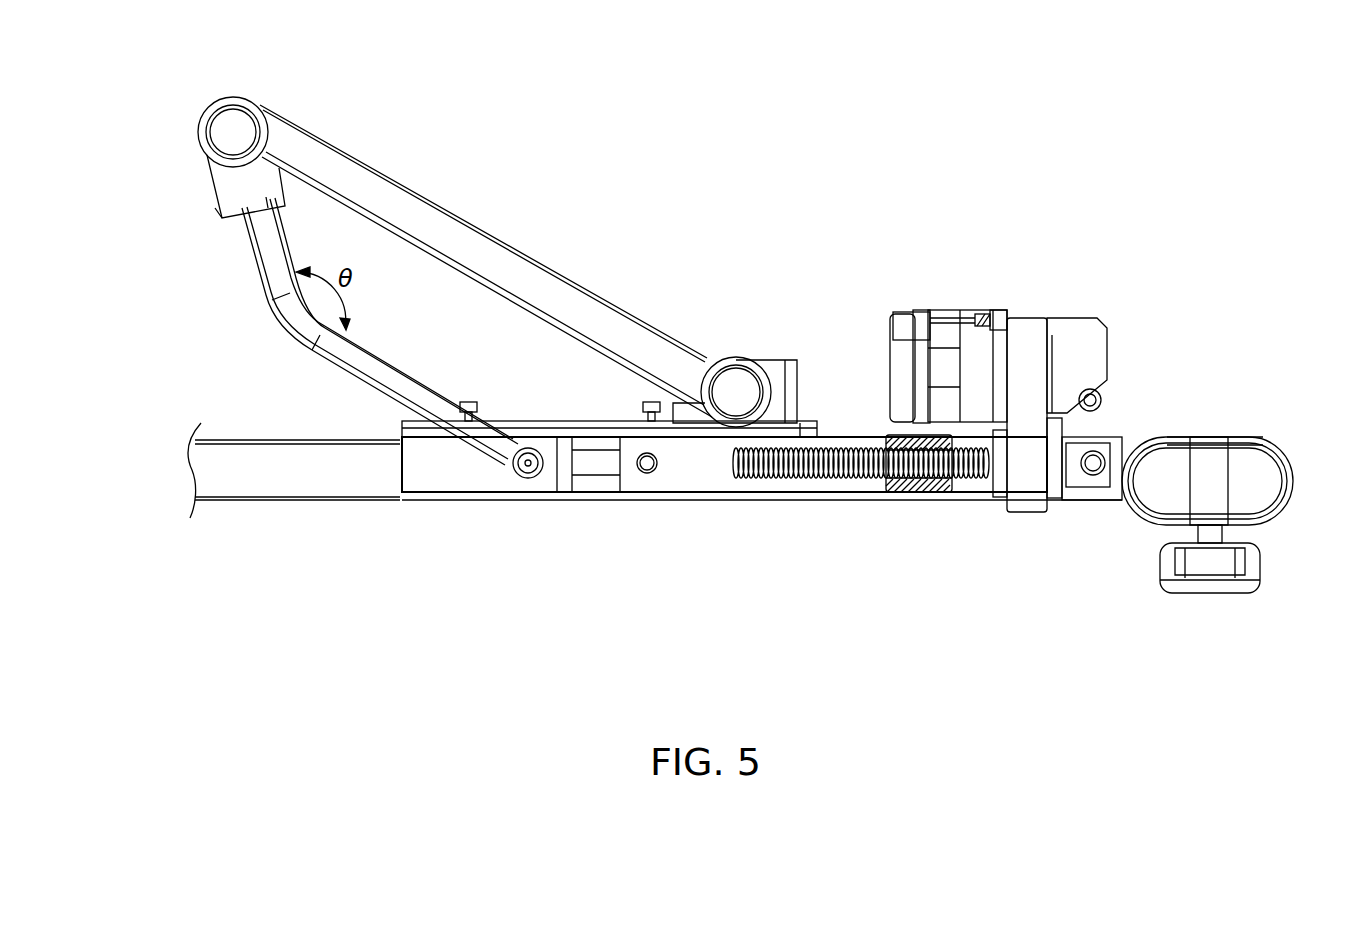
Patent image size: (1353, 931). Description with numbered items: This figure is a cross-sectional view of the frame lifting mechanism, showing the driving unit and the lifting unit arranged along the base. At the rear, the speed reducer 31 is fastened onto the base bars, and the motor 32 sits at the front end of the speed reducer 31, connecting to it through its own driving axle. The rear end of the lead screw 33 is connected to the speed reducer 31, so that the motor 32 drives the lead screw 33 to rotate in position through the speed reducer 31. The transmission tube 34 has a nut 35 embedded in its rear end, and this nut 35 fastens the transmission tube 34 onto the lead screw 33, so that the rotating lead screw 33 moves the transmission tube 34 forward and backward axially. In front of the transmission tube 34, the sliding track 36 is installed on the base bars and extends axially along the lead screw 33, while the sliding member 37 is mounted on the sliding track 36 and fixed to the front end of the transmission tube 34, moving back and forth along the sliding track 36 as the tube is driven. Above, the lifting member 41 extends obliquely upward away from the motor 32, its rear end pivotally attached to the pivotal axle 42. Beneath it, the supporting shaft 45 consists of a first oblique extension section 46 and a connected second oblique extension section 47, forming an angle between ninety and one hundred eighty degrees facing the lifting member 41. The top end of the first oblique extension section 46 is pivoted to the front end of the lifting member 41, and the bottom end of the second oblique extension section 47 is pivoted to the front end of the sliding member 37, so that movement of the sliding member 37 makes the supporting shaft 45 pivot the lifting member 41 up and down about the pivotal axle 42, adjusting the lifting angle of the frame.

The speed reducer 31 is at (1087, 335).
The motor 32 is at (943, 337).
The lead screw 33 is at (851, 470).
The transmission tube 34 is at (792, 493).
The nut 35 is at (924, 487).
The sliding track 36 is at (445, 472).
The sliding member 37 is at (504, 475).
The lifting member 41 is at (386, 198).
The pivotal axle 42 is at (738, 385).
The supporting shaft 45 is at (312, 331).
The first oblique extension section 46 is at (242, 268).
The second oblique extension section 47 is at (370, 377).